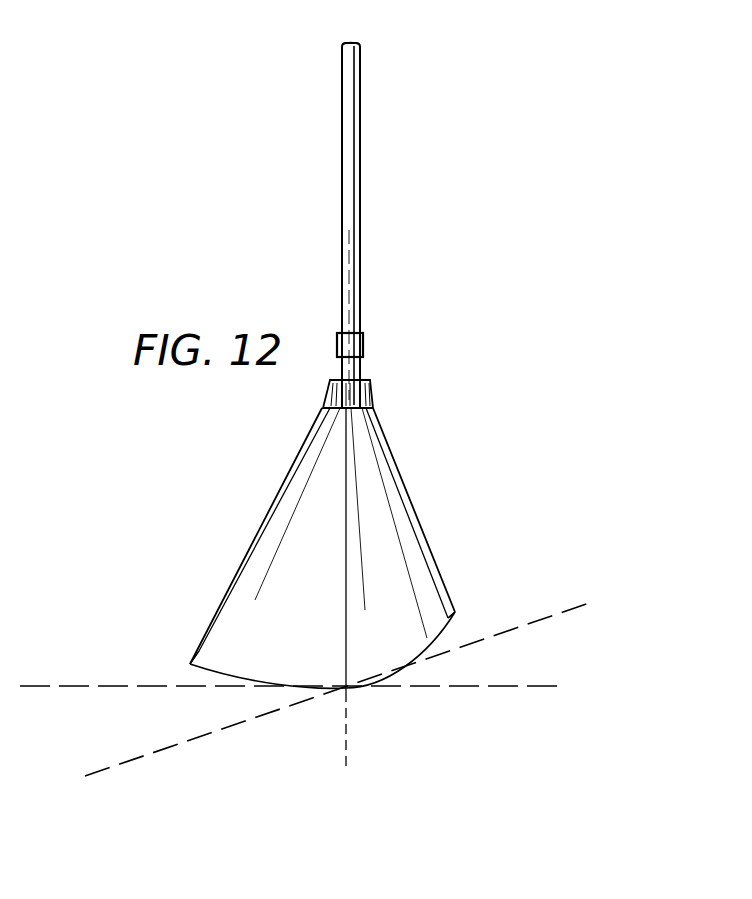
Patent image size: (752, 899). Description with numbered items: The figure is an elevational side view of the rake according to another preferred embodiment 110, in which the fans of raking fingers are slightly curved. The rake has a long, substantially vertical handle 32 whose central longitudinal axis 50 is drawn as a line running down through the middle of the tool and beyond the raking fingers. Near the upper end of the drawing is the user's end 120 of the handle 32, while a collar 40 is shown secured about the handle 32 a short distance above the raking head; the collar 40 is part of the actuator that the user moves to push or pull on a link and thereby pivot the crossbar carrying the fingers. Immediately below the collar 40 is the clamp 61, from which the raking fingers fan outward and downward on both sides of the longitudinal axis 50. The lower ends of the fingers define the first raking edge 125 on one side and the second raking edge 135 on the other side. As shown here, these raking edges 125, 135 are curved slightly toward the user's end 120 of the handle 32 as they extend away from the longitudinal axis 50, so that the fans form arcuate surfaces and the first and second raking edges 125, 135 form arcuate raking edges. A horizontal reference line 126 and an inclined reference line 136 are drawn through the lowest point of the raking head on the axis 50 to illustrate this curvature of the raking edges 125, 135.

The user's end of handle 120 is at (356, 44).
The handle 32 is at (360, 212).
The collar 40 is at (358, 345).
The clamp 61 is at (330, 384).
The preferred embodiment 110 is at (495, 356).
The central longitudinal axis 50 is at (348, 736).
The floor surface line 126 is at (83, 687).
The inclined line 136 is at (566, 609).
The second raking edge 135 is at (452, 628).
The first raking edge 125 is at (196, 672).